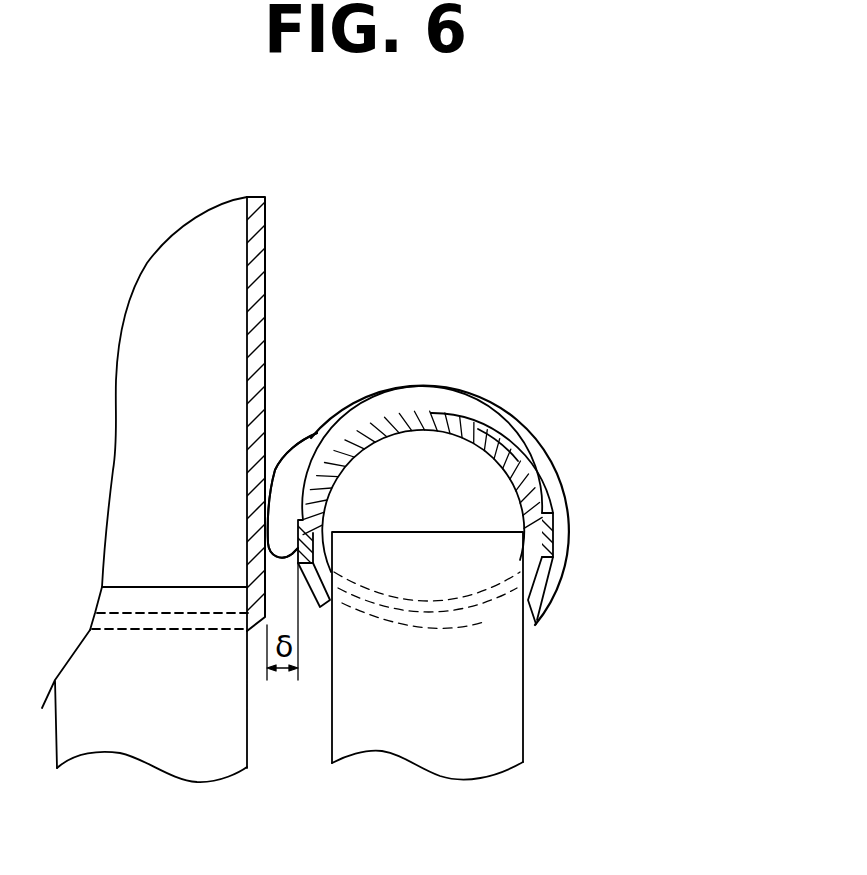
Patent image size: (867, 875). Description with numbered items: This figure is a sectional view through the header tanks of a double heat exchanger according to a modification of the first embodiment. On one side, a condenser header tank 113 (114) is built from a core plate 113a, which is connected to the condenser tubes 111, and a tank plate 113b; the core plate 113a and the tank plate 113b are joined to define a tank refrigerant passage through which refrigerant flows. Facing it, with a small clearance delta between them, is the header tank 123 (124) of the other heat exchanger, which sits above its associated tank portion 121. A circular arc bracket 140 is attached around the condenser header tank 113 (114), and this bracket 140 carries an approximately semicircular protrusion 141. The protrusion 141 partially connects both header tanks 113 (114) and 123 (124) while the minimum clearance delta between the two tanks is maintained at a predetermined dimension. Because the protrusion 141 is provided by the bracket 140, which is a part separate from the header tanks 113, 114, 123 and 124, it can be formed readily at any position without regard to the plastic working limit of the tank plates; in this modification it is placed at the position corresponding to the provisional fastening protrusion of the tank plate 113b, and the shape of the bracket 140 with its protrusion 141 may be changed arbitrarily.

The condenser tube 111 is at (483, 694).
The condenser header tank 113 is at (499, 431).
The condenser header tank 114 is at (425, 491).
The core plate 113a is at (487, 622).
The tank plate 113b is at (541, 447).
The header tank 121 is at (153, 738).
The header tank 123 is at (268, 284).
The header tank 124 is at (256, 395).
The circular arc bracket 140 is at (475, 391).
The protrusion 141 is at (297, 455).